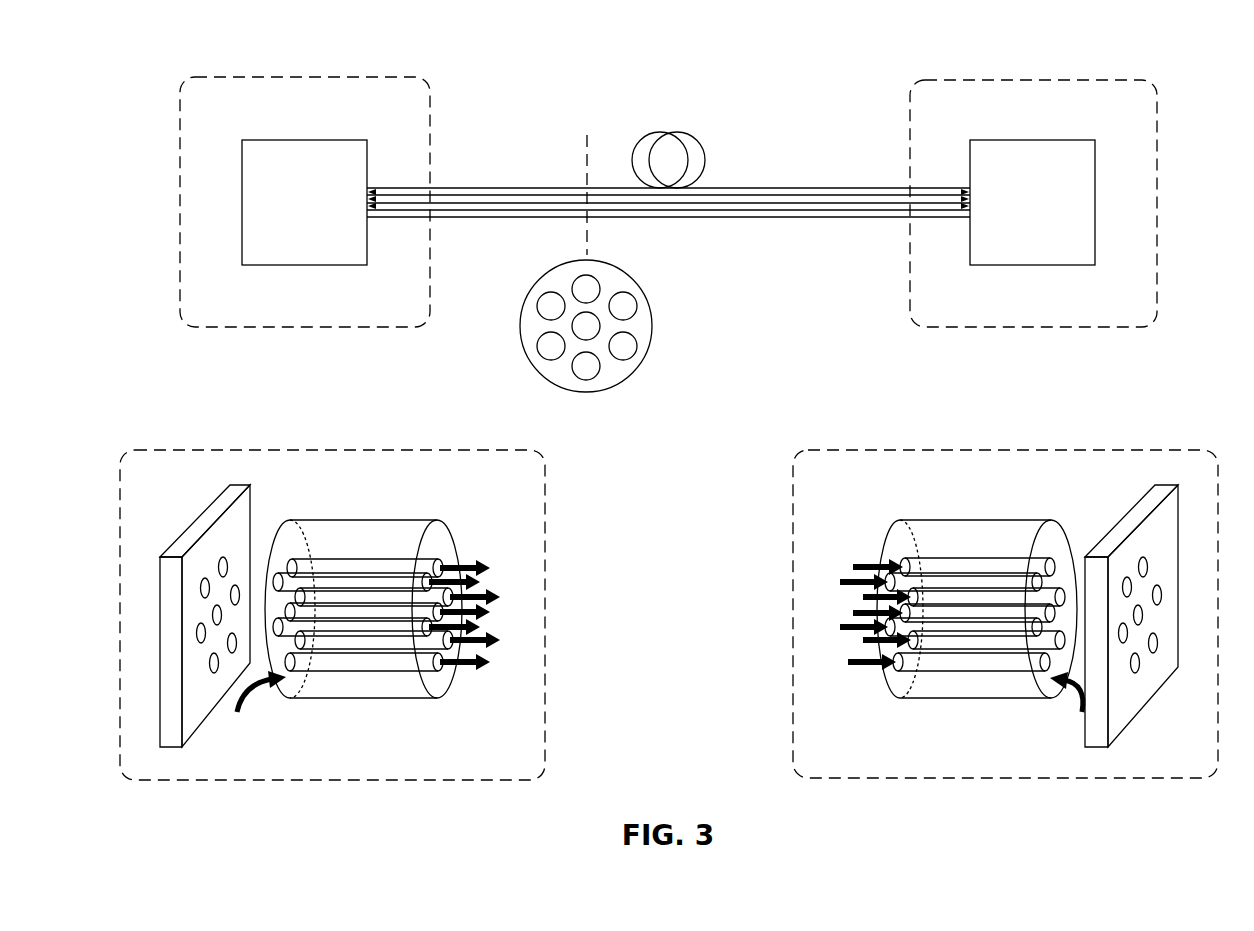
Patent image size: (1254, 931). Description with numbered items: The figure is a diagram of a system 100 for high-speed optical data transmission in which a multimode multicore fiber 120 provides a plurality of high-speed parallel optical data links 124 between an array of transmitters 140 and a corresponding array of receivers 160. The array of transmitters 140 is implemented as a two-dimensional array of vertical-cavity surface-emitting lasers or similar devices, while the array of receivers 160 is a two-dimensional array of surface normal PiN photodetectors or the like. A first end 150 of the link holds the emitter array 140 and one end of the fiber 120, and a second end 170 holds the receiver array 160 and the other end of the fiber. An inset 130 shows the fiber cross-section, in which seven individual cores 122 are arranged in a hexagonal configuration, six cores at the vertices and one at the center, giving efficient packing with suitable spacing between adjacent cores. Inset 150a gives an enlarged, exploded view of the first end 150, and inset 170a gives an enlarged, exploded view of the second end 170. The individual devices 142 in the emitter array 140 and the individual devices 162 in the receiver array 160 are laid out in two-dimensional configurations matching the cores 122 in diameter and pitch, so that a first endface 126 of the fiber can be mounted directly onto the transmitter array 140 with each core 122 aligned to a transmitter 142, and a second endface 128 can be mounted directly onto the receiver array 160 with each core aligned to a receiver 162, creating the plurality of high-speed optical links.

The system 100 is at (692, 30).
The multimode multicore fiber 120 is at (706, 143).
The MCF cores 122 is at (626, 302).
The high-speed parallel optical data links 124 is at (500, 629).
The first endface 126 is at (254, 703).
The second endface 128 is at (1062, 703).
The inset 130 is at (638, 398).
The array of transmitters 140 is at (291, 245).
The individual transmitters 142 is at (227, 568).
The first end 150 is at (286, 67).
The inset 150a is at (352, 440).
The array of receivers 160 is at (1018, 245).
The individual receivers 162 is at (1160, 595).
The second end 170 is at (1014, 67).
The inset 170a is at (1034, 440).